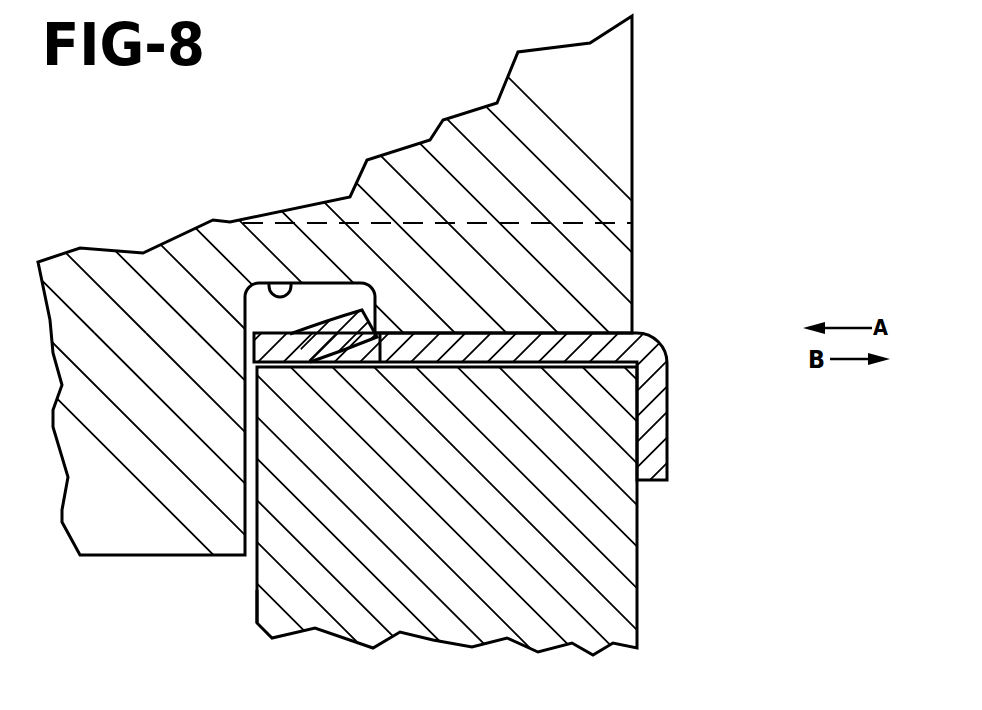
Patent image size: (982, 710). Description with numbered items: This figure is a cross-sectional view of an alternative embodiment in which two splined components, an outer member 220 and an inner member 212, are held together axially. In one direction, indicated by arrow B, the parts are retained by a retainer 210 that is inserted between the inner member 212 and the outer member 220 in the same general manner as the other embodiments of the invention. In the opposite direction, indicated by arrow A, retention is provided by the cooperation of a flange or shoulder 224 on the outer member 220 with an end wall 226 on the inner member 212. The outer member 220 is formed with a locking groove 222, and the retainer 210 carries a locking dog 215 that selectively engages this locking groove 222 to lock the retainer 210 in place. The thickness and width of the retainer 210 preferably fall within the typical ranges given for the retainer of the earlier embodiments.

The retainer 210 is at (707, 407).
The inner member 212 is at (628, 613).
The locking dog 215 is at (347, 328).
The outer member 220 is at (597, 82).
The locking groove 222 is at (273, 287).
The flange or shoulder 224 is at (102, 515).
The end wall 226 is at (257, 597).